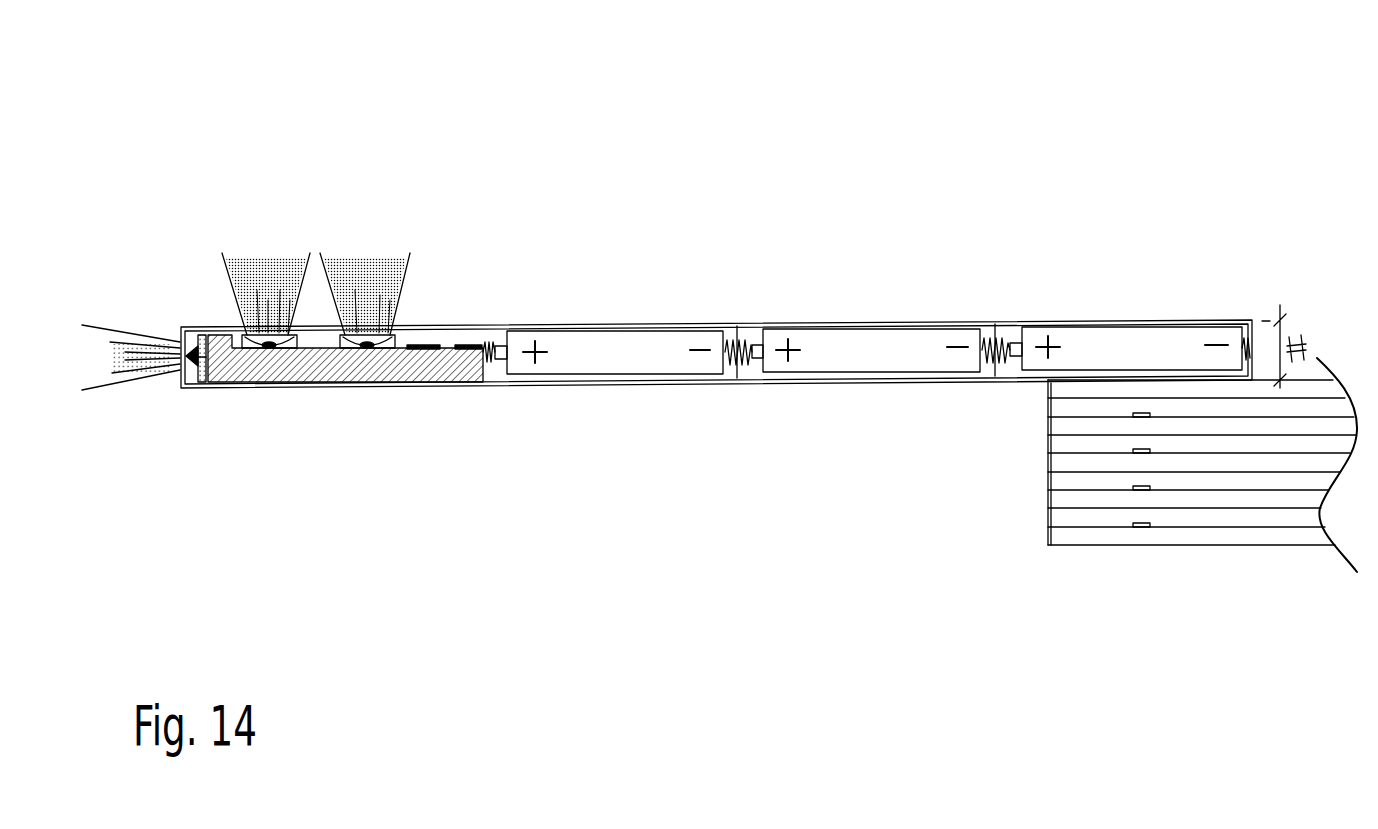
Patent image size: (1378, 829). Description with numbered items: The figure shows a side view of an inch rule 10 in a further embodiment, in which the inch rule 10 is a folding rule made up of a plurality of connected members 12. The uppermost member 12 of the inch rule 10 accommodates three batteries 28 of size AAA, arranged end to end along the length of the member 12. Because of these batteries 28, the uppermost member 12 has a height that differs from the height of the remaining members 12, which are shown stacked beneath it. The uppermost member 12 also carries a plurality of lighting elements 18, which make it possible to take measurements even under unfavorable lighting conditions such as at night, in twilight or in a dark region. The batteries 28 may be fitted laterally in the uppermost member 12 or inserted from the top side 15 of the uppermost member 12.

The inch rule 10 is at (310, 133).
The member 12 is at (473, 385).
The top side 15 is at (755, 312).
The lighting element 18 is at (383, 238).
The battery 28 is at (626, 362).